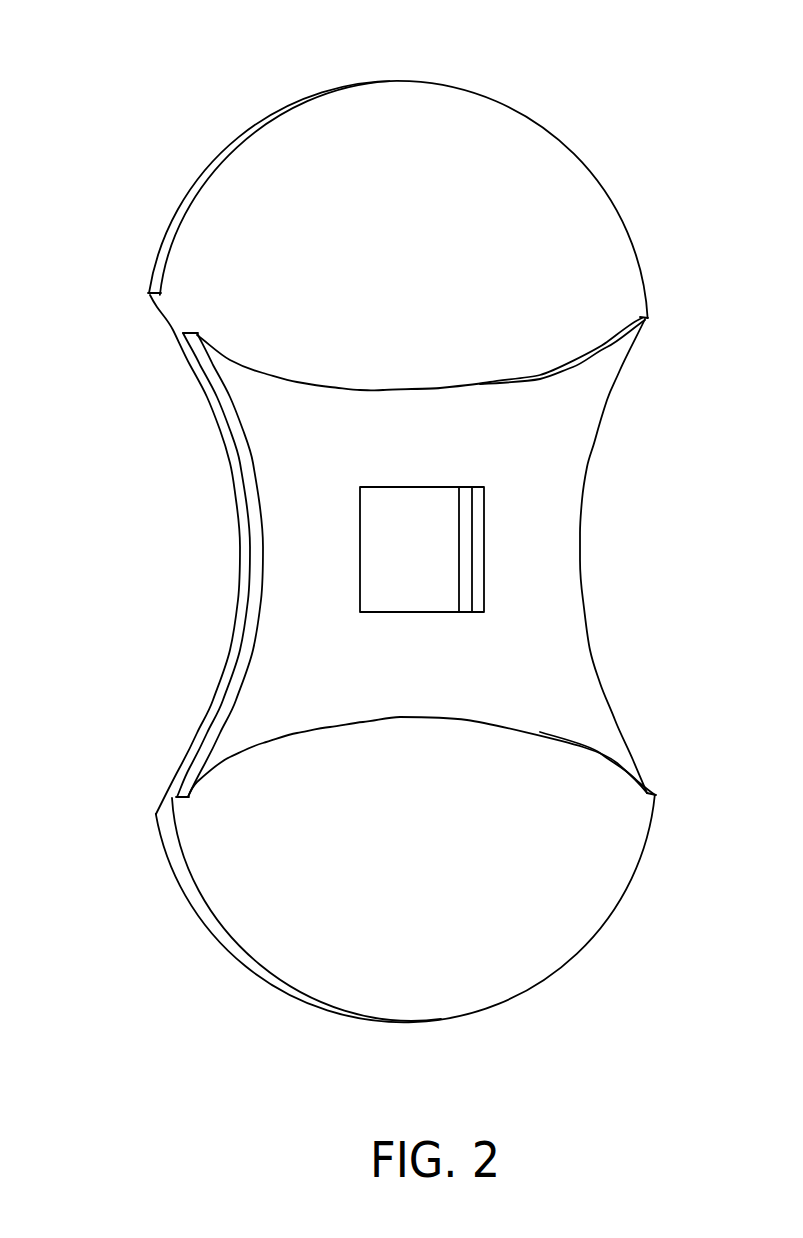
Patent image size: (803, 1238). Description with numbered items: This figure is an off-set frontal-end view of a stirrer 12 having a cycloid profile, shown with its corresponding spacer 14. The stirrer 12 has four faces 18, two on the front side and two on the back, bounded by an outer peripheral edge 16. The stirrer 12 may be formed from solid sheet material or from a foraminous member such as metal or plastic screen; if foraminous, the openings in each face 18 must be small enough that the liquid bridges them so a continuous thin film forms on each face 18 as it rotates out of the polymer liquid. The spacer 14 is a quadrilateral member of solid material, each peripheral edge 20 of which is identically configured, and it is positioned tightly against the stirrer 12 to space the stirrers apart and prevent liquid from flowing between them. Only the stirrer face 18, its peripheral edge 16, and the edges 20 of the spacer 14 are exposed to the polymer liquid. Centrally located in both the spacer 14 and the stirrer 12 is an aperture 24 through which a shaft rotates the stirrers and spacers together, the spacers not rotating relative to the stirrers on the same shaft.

The stirrer 12 is at (150, 293).
The spacer 14 is at (437, 680).
The outer peripheral edge 16 is at (270, 117).
The stirrer face 18 is at (572, 204).
The peripheral edge of spacer 20 is at (381, 390).
The aperture 24 is at (422, 487).